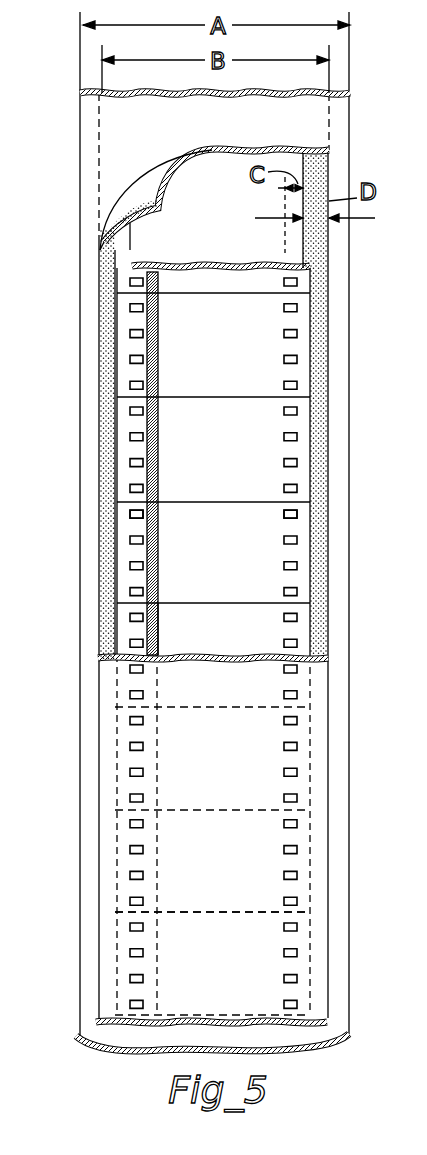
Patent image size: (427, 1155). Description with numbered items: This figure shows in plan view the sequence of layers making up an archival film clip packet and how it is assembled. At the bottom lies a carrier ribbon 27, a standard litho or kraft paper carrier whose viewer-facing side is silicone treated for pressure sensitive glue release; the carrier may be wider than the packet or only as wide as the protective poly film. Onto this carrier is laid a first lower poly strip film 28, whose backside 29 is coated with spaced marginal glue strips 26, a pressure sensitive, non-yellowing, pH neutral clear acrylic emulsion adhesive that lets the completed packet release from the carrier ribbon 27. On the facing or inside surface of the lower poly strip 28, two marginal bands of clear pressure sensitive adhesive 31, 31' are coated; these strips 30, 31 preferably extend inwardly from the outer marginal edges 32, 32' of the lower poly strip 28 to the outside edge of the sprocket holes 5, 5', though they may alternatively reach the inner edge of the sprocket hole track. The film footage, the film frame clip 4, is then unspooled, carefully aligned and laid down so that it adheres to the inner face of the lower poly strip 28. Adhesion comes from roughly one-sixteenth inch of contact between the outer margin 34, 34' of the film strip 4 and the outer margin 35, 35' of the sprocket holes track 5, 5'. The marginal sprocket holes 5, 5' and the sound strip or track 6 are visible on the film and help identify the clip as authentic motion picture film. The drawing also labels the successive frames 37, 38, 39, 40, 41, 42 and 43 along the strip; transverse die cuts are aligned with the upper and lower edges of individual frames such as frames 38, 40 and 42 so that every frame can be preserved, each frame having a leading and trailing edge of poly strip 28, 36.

The film frame clip 4 is at (195, 265).
The marginal sprocket holes 5 is at (329, 643).
The marginal sprocket holes 5' is at (89, 643).
The sound strip or track 6 is at (150, 266).
The marginal glue strips 26 is at (112, 215).
The carrier ribbon 27 is at (86, 133).
The lower poly strip film 28 is at (247, 150).
The backside of lower poly strip 29 is at (152, 176).
The adhesive strip 30 is at (197, 199).
The marginal band of clear pressure sensitive adhesive 31 is at (344, 242).
The marginal band of clear pressure sensitive adhesive 31' is at (71, 265).
The outer marginal edge of lower poly strip 32 is at (349, 320).
The outer marginal edge of lower poly strip 32' is at (69, 445).
The outer margin of film strip 34 is at (349, 450).
The outer margin of film strip 34' is at (69, 450).
The outer margin of sprocket holes track 35 is at (336, 526).
The outer margin of sprocket holes track 35' is at (83, 526).
The poly strip leading and trailing edge 36 is at (190, 650).
The film frame 37 is at (213, 360).
The film frame 38 is at (217, 464).
The film frame 39 is at (217, 565).
The film frame 40 is at (242, 640).
The film frame 41 is at (205, 770).
The film frame 42 is at (205, 875).
The film frame 43 is at (215, 978).